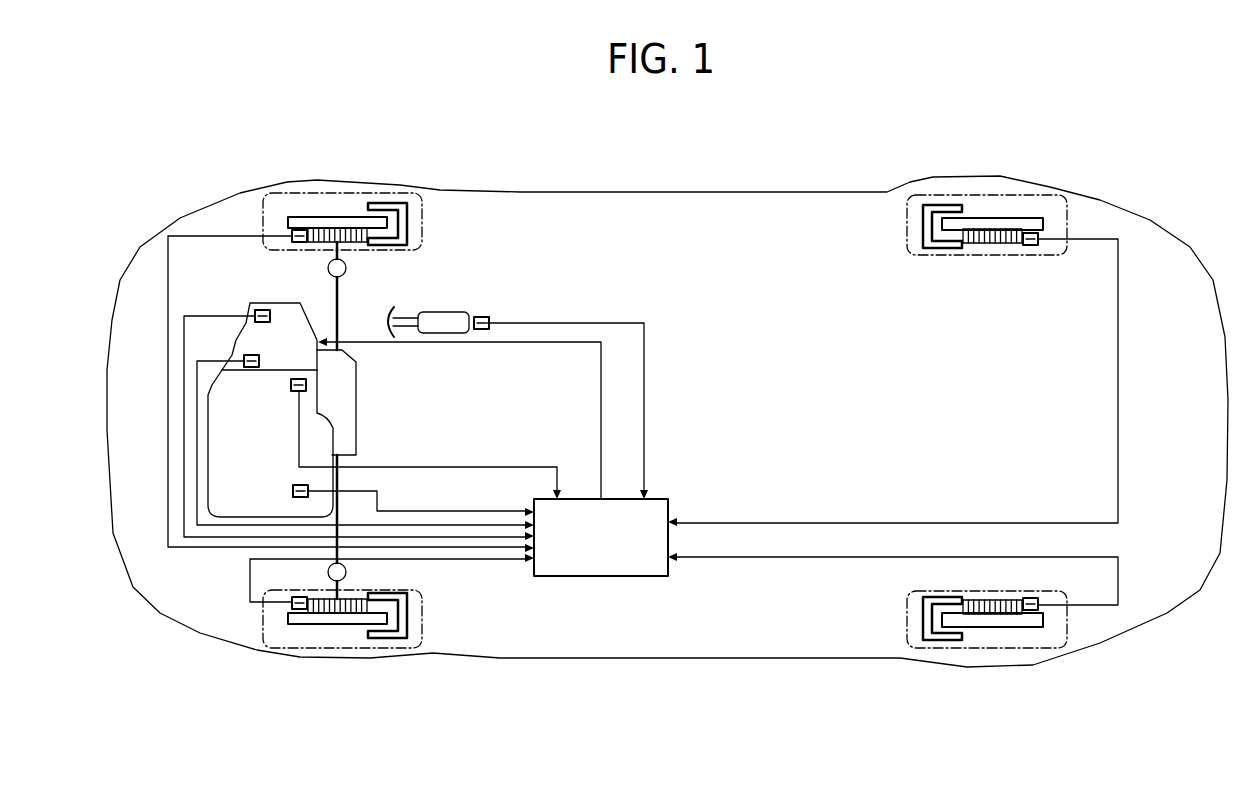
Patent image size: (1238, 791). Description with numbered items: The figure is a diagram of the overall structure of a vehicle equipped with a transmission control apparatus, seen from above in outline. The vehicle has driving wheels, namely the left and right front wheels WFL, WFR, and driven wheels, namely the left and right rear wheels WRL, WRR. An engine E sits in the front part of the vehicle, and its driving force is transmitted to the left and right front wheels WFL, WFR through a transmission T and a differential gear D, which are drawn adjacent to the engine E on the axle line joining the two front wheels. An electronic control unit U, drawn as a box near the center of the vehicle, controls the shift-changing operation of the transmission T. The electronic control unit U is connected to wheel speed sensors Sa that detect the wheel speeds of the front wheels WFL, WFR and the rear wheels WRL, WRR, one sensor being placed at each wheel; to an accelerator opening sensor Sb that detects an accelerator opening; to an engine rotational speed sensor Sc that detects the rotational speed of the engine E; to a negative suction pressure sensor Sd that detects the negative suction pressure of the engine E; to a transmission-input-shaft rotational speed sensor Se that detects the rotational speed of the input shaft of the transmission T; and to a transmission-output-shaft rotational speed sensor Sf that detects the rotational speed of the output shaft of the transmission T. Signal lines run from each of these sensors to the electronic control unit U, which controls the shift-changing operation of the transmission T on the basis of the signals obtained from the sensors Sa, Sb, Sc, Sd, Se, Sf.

The wheel speed sensors Sa is at (292, 240).
The accelerator opening sensor Sb is at (484, 317).
The engine rotational speed sensor Sc is at (298, 392).
The negative suction pressure sensor Sd is at (293, 491).
The transmission-input-shaft rotational speed sensor Se is at (265, 311).
The transmission-output-shaft rotational speed sensor Sf is at (252, 368).
The differential gear D is at (345, 360).
The transmission T is at (269, 336).
The engine E is at (270, 410).
The electronic control unit U is at (601, 537).
The right front wheel WFR is at (330, 192).
The left front wheel WFL is at (345, 650).
The right rear wheel WRR is at (973, 195).
The left rear wheel WRL is at (988, 650).